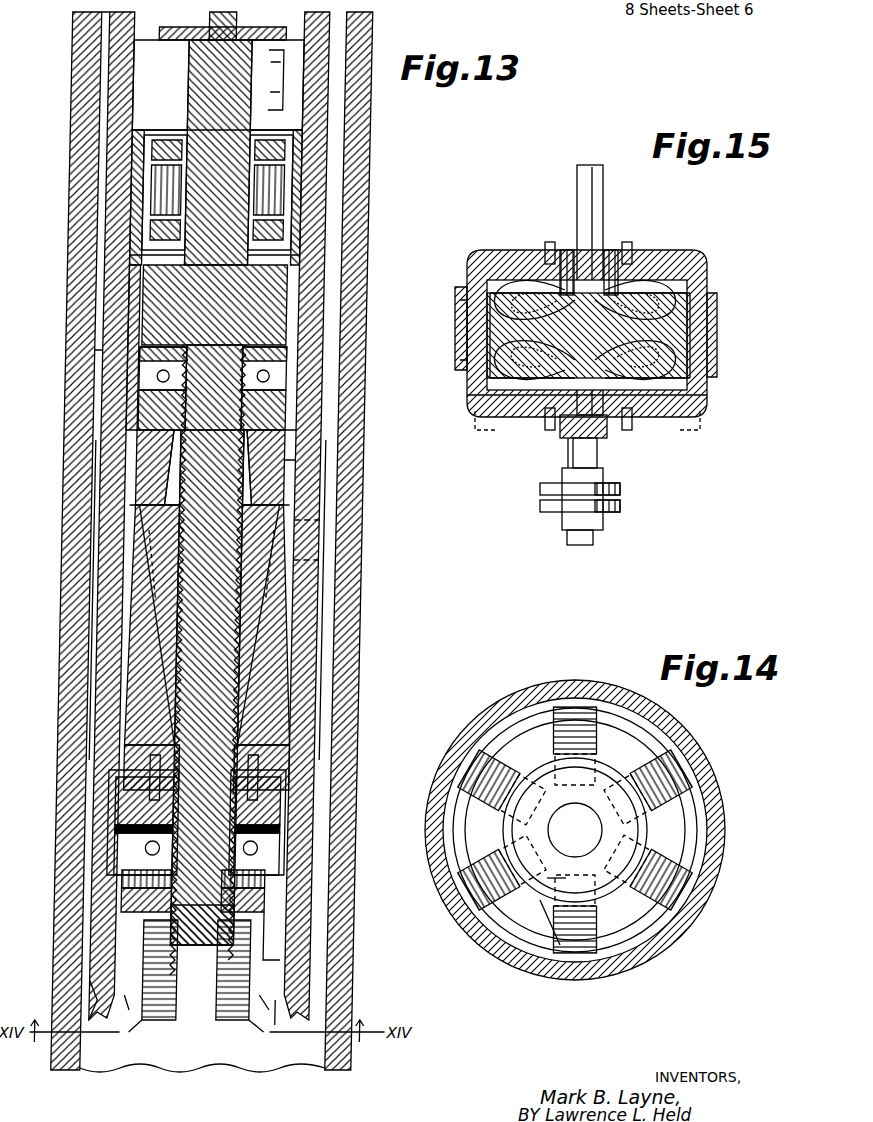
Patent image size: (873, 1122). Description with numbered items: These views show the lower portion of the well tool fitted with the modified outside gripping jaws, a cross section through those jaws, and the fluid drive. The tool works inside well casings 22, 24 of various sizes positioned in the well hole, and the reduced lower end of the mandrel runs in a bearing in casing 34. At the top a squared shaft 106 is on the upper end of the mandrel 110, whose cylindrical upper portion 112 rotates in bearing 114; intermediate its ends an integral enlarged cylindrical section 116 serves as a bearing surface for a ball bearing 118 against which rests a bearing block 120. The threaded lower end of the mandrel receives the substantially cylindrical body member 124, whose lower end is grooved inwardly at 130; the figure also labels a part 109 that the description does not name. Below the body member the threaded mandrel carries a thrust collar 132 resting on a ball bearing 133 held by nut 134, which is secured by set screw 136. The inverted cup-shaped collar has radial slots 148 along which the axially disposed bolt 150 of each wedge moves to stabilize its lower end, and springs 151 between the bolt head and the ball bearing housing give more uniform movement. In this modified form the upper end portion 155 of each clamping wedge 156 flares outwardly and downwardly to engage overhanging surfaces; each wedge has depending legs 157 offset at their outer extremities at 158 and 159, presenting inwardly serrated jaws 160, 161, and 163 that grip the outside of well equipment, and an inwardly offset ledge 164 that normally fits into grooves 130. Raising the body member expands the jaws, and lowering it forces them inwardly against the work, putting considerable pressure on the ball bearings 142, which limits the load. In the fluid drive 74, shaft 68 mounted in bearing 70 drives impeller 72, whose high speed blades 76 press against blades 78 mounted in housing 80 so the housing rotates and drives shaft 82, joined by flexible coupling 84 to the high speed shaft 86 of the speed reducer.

In FIG. 14, the well casing 22 is at (690, 749).
In FIG. 13, the well casing 24 is at (372, 193).
In FIG. 13, the casing 34 is at (122, 350).
In FIG. 15, the shaft 68 is at (590, 226).
In FIG. 15, the bearing 70 is at (645, 255).
In FIG. 15, the impeller 72 is at (665, 330).
In FIG. 15, the fluid drive 74 is at (496, 436).
In FIG. 15, the impeller blades 76 is at (690, 350).
In FIG. 15, the blades 78 is at (675, 389).
In FIG. 15, the housing 80 is at (478, 393).
In FIG. 15, the shaft 82 is at (585, 453).
In FIG. 15, the flexible coupling 84 is at (622, 490).
In FIG. 15, the high speed shaft 86 is at (598, 537).
In FIG. 13, the squared shaft 106 is at (211, 40).
In FIG. 13, the cone 109 is at (179, 442).
In FIG. 13, the mandrel 110 is at (227, 602).
In FIG. 14, the mandrel 110 is at (592, 830).
In FIG. 13, the cylindrical upper portion 112 is at (197, 90).
In FIG. 13, the bearing 114 is at (166, 205).
In FIG. 13, the enlarged cylindrical section 116 is at (152, 322).
In FIG. 13, the ball bearing 118 is at (163, 378).
In FIG. 13, the bearing block 120 is at (157, 416).
In FIG. 13, the body member 124 is at (278, 646).
In FIG. 13, the lower end grooves 130 is at (315, 732).
In FIG. 13, the thrust collar 132 is at (302, 802).
In FIG. 13, the ball bearing 133 is at (283, 843).
In FIG. 14, the ball bearing 133 is at (547, 878).
In FIG. 13, the nut 134 is at (284, 902).
In FIG. 14, the nut 134 is at (540, 900).
In FIG. 13, the set screw 136 is at (283, 876).
In FIG. 13, the ball bearings 142 is at (341, 536).
In FIG. 13, the radial slots 148 is at (147, 797).
In FIG. 13, the bolt 150 is at (271, 792).
In FIG. 13, the springs 151 is at (297, 814).
In FIG. 13, the upper end portion 155 is at (318, 616).
In FIG. 13, the clamping wedges 156 is at (300, 462).
In FIG. 13, the depending legs 157 is at (116, 875).
In FIG. 13, the offset 158 is at (126, 1005).
In FIG. 14, the offset 158 is at (483, 855).
In FIG. 13, the offset 159 is at (171, 1005).
In FIG. 14, the offset 159 is at (562, 747).
In FIG. 13, the serrated jaw 160 is at (215, 1010).
In FIG. 13, the serrated jaw 161 is at (296, 1020).
In FIG. 13, the serrated jaw 163 is at (300, 966).
In FIG. 13, the inwardly offset ledge 164 is at (316, 752).